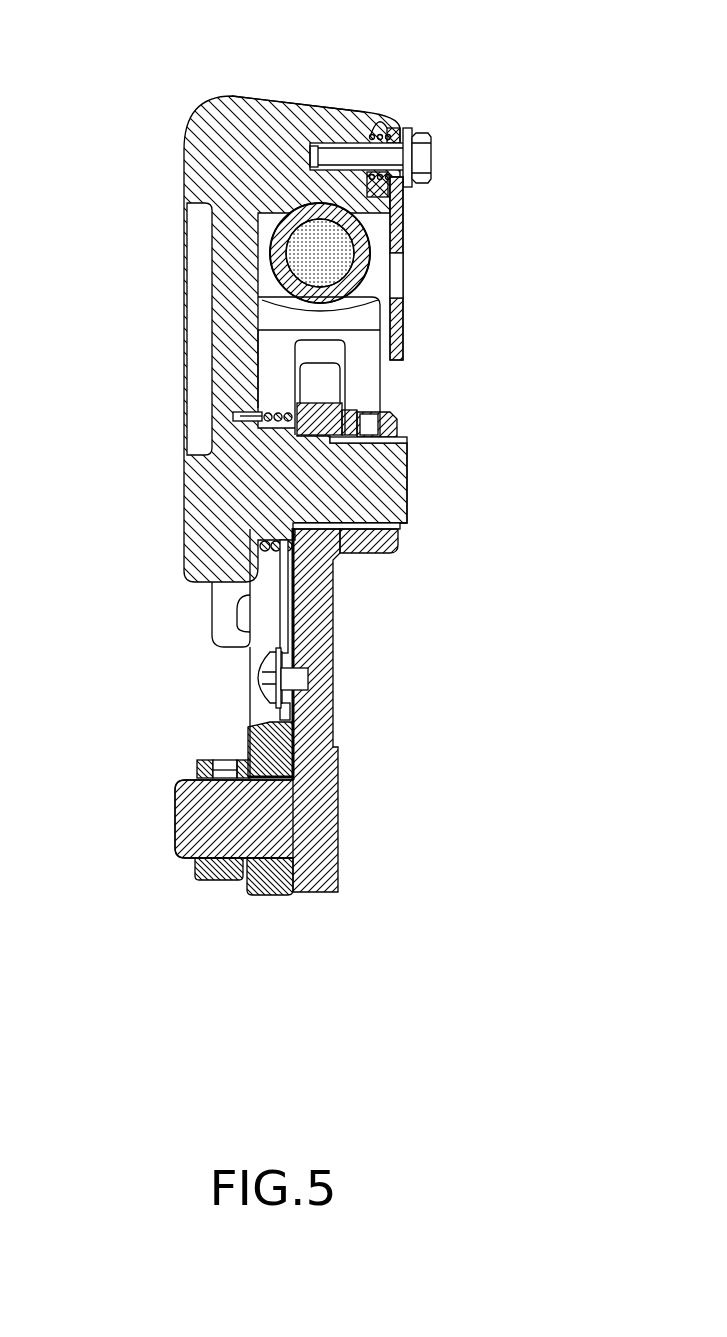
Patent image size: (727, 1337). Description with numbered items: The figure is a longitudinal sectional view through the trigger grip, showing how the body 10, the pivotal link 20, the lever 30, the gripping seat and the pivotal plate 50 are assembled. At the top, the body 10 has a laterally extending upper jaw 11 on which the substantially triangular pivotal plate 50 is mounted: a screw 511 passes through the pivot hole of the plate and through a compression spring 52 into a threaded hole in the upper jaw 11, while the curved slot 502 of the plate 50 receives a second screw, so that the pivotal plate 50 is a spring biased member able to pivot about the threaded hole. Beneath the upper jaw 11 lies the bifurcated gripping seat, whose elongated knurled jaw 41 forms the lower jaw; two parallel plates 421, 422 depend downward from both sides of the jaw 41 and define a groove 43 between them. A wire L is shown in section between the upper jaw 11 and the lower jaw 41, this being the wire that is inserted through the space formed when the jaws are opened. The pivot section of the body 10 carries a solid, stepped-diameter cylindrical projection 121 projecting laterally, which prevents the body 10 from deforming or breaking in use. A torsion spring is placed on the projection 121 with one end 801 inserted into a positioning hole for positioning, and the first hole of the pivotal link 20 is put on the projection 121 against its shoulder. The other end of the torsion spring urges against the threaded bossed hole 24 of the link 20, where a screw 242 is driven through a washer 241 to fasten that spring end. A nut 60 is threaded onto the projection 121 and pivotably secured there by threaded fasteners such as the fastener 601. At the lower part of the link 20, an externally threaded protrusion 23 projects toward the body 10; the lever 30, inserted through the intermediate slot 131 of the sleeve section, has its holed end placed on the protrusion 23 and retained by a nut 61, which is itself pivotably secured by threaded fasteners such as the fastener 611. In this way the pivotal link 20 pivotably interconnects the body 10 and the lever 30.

The body 10 is at (200, 101).
The upper jaw 11 is at (322, 105).
The compression spring 52 is at (385, 135).
The screw 511 is at (428, 158).
The pivotal plate 50 is at (446, 268).
The curved slot 502 is at (398, 274).
The wire L is at (290, 240).
The knurled jaw 41 is at (380, 302).
The parallel plate 421 is at (362, 370).
The parallel plate 422 is at (272, 378).
The groove 43 is at (308, 352).
The end of torsion spring 801 is at (246, 414).
The threaded fastener 601 is at (372, 426).
The cylindrical projection 121 is at (388, 484).
The nut 60 is at (382, 553).
The pivotal link 20 is at (333, 630).
The externally threaded protrusion 23 is at (215, 822).
The threaded bossed hole 24 is at (290, 692).
The washer 241 is at (262, 693).
The screw 242 is at (260, 670).
The threaded fastener 611 is at (210, 768).
The intermediate slot 131 is at (247, 598).
The nut 61 is at (215, 882).
The lever 30 is at (280, 883).